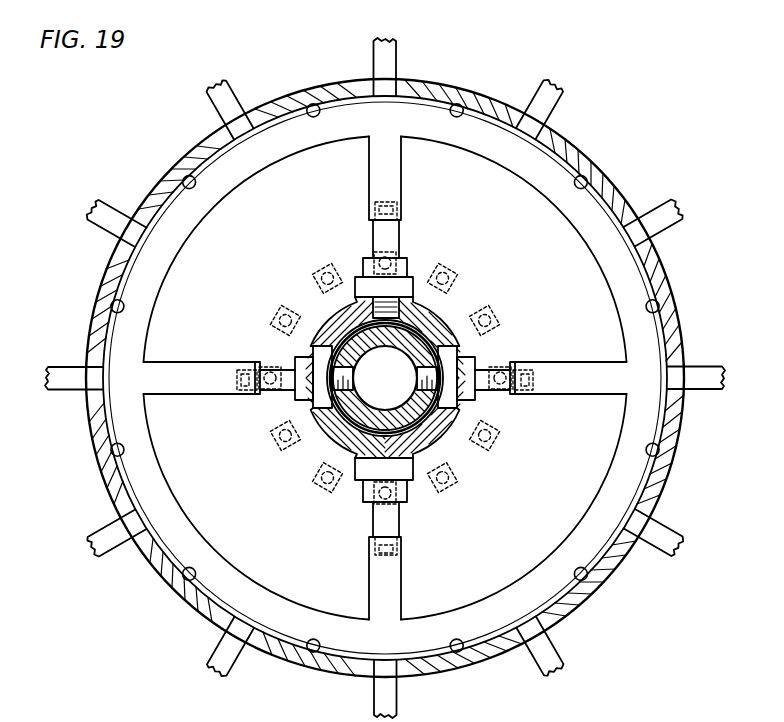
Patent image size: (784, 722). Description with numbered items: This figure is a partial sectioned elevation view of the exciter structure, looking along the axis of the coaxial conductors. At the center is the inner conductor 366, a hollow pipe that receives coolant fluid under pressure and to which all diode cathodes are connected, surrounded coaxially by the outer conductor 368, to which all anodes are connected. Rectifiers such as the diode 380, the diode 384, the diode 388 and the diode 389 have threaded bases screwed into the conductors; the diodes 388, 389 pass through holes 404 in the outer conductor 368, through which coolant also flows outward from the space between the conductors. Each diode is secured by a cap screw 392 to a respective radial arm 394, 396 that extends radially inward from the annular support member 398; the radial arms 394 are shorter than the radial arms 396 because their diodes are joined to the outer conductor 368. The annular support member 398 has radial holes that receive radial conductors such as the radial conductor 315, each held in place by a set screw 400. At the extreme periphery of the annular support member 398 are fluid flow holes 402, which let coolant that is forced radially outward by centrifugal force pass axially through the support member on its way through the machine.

The radial conductor 315 is at (392, 48).
The inner conductor 366 is at (412, 416).
The outer conductor 368 is at (437, 323).
The diode 380 is at (400, 268).
The diode 384 is at (397, 512).
The diode 388 is at (272, 363).
The diode 389 is at (487, 367).
The cap screw 392 is at (393, 212).
The radial arm 394 is at (380, 183).
The radial arm 396 is at (185, 365).
The annular support member 398 is at (595, 210).
The set screw 400 is at (368, 104).
The fluid flow hole 402 is at (480, 98).
The hole 404 is at (312, 408).